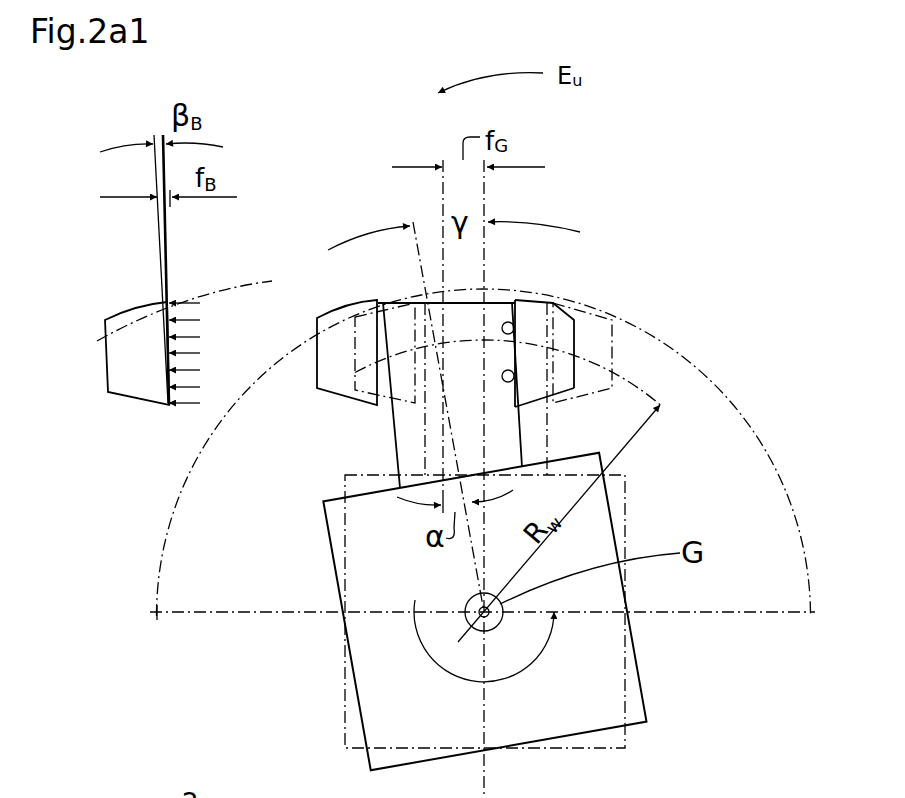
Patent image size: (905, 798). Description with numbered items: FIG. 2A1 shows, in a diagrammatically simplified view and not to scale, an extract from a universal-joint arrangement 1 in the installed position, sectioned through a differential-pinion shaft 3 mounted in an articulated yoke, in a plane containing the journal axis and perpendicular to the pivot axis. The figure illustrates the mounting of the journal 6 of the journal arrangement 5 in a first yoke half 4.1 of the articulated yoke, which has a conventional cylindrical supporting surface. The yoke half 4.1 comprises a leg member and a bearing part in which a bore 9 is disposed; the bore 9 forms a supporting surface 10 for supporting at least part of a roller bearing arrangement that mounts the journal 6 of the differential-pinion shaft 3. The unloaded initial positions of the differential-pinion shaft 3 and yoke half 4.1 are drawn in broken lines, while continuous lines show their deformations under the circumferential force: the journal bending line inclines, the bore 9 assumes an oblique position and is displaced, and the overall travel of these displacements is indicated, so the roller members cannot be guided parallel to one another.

The universal-joint arrangement 1 is at (597, 300).
The differential-pinion shaft 3 is at (327, 654).
The first yoke half 4.1 is at (617, 337).
The journal arrangement 5 is at (372, 548).
The journal 6 is at (400, 411).
The bore 9 is at (515, 333).
The supporting surface 10 is at (517, 405).